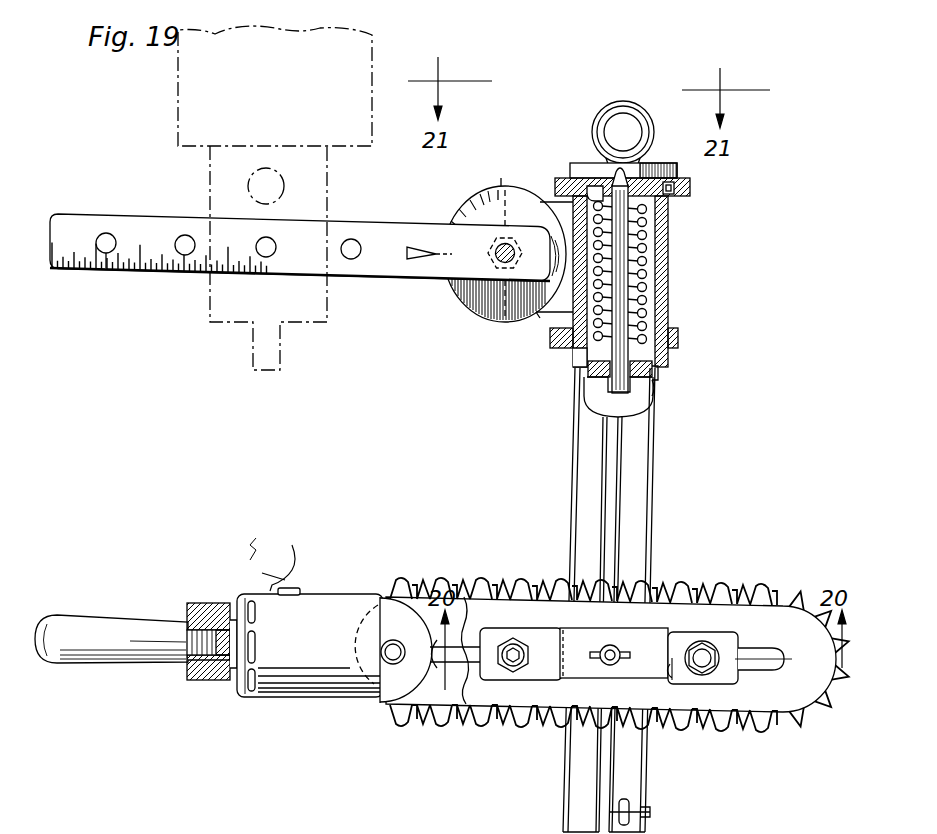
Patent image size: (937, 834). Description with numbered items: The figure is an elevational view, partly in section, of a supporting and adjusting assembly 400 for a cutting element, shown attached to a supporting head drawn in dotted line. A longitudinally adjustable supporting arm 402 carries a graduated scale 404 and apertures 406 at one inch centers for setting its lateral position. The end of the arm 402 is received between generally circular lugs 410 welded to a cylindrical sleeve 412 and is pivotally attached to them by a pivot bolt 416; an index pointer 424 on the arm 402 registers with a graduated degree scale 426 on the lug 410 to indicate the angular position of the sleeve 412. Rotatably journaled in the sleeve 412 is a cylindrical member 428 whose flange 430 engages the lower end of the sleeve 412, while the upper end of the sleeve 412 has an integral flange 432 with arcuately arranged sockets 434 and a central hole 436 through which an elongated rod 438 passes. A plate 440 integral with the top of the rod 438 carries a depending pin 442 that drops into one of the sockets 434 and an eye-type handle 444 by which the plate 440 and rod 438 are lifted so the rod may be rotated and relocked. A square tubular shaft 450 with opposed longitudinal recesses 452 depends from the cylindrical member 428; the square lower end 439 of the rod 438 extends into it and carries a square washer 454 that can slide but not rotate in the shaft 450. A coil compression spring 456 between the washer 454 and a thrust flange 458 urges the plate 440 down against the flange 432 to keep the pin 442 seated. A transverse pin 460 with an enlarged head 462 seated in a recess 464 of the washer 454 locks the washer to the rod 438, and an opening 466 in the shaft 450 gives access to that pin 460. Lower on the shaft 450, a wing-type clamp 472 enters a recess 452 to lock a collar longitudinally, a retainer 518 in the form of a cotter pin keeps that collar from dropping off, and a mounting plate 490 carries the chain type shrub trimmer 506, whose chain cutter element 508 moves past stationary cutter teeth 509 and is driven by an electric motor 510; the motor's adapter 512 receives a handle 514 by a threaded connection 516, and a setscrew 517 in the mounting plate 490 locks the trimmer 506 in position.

The supporting and adjusting assembly 400 is at (660, 419).
The supporting arm 402 is at (402, 273).
The graduated scale 404 is at (106, 272).
The apertures 406 is at (107, 233).
The lugs 410 is at (484, 312).
The cylindrical sleeve 412 is at (661, 276).
The pivot bolt 416 is at (496, 257).
The index pointer 424 is at (414, 243).
The graduated degree scale 426 is at (498, 184).
The cylindrical member 428 is at (652, 308).
The flange 430 is at (673, 338).
The integral flange 432 is at (672, 196).
The sockets 434 is at (665, 208).
The central hole 436 is at (636, 182).
The elongated rod 438 is at (630, 170).
The square lower end 439 is at (566, 316).
The plate 440 is at (574, 176).
The depending pin 442 is at (676, 188).
The eye-type handle 444 is at (604, 118).
The square tubular shaft 450 is at (652, 469).
The longitudinal recesses 452 is at (612, 515).
The square washer 454 is at (655, 368).
The coil compression spring 456 is at (578, 354).
The thrust flange 458 is at (600, 188).
The transverse pin 460 is at (600, 380).
The enlarged head 462 is at (608, 412).
The recess 464 is at (656, 380).
The opening 466 is at (656, 390).
The wing-type clamp 472 is at (606, 665).
The mounting plate 490 is at (530, 669).
The chain type shrub trimmer 506 is at (492, 572).
The chain cutter element 508 is at (708, 593).
The stationary cutter teeth 509 is at (730, 597).
The electric motor 510 is at (325, 605).
The adapter 512 is at (205, 677).
The handle 514 is at (121, 626).
The threaded connection 516 is at (190, 656).
The setscrew 517 is at (729, 669).
The retainer 518 is at (632, 812).